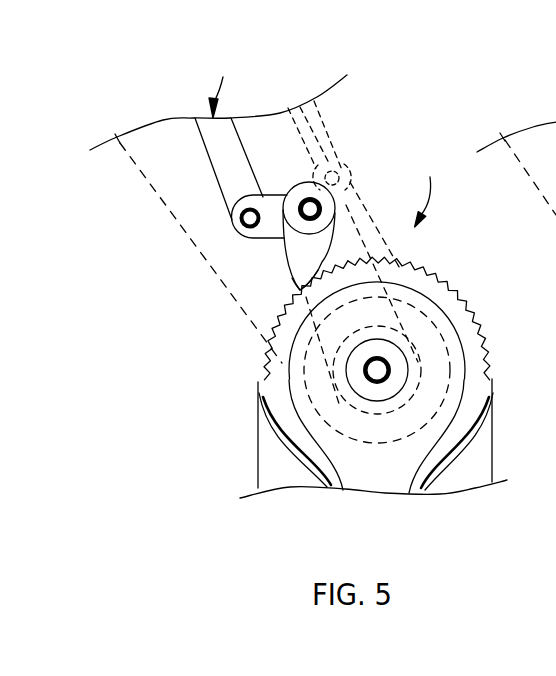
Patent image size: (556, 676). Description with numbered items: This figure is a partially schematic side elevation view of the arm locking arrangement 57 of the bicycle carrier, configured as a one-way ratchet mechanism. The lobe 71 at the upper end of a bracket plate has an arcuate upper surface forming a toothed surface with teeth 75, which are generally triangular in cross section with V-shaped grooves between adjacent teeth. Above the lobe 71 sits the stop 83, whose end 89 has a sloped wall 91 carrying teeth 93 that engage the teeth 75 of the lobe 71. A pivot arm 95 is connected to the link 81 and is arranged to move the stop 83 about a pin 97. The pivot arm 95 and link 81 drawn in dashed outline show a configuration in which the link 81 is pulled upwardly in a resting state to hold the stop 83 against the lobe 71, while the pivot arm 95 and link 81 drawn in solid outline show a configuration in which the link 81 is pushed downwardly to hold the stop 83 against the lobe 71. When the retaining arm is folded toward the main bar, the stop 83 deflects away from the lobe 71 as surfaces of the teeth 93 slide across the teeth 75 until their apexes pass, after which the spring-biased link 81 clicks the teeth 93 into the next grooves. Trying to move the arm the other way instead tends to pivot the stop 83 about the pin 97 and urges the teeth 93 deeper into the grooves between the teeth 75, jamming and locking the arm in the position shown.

The arm locking arrangement 57 is at (429, 187).
The lobe 71 is at (477, 382).
The teeth 75 is at (468, 300).
The link 81 is at (212, 143).
The stop 83 is at (357, 231).
The end 89 is at (268, 262).
The sloped wall 91 is at (392, 257).
The teeth 93 is at (268, 328).
The pivot arm 95 is at (240, 222).
The pin 97 is at (307, 206).